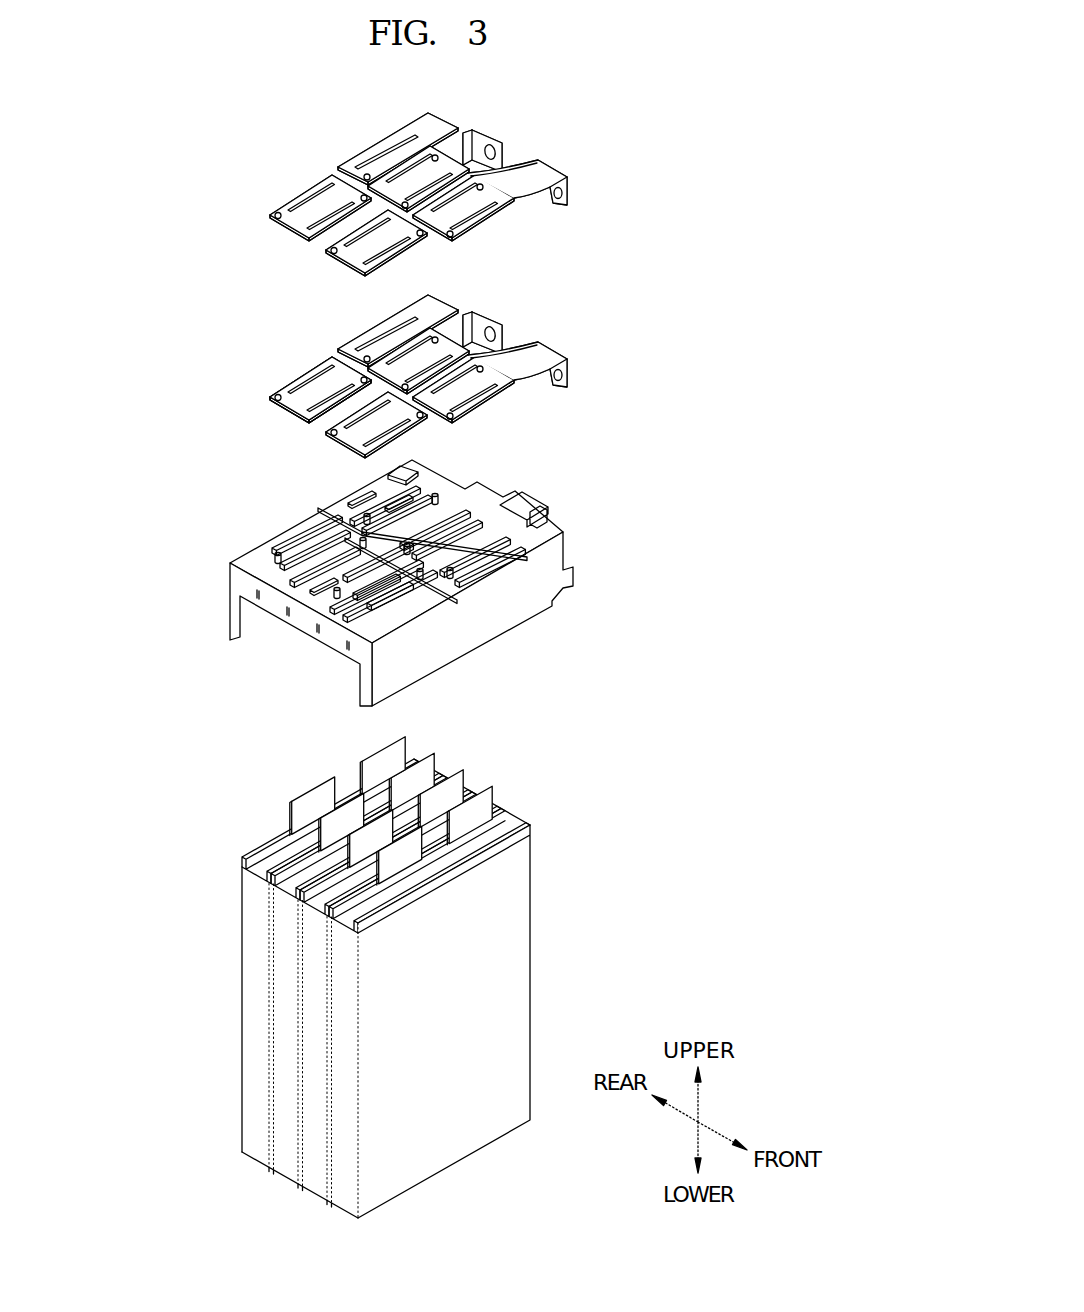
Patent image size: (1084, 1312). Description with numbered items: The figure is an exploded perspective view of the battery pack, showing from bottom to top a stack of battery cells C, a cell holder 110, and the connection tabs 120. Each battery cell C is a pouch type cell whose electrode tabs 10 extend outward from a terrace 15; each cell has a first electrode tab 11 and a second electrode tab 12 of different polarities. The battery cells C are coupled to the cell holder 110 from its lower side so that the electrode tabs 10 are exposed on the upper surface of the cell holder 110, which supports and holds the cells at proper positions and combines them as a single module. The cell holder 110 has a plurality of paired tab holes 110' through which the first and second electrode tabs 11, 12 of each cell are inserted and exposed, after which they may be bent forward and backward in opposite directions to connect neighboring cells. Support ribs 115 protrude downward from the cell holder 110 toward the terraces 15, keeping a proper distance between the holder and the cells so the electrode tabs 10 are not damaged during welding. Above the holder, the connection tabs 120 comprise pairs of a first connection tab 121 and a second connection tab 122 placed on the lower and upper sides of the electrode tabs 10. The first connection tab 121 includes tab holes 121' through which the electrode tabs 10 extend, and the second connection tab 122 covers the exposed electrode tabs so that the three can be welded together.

The electrode tabs 10 is at (414, 955).
The first electrode tab 11 is at (310, 797).
The second electrode tab 12 is at (380, 753).
The terrace 15 is at (520, 820).
The battery cell C is at (525, 963).
The cell holder 110 is at (463, 583).
The tab hole 110' is at (292, 506).
The support rib 115 is at (298, 622).
The connection tab 120 is at (689, 197).
The first connection tab 121 is at (475, 376).
The tab hole 121' is at (305, 372).
The second connection tab 122 is at (582, 203).